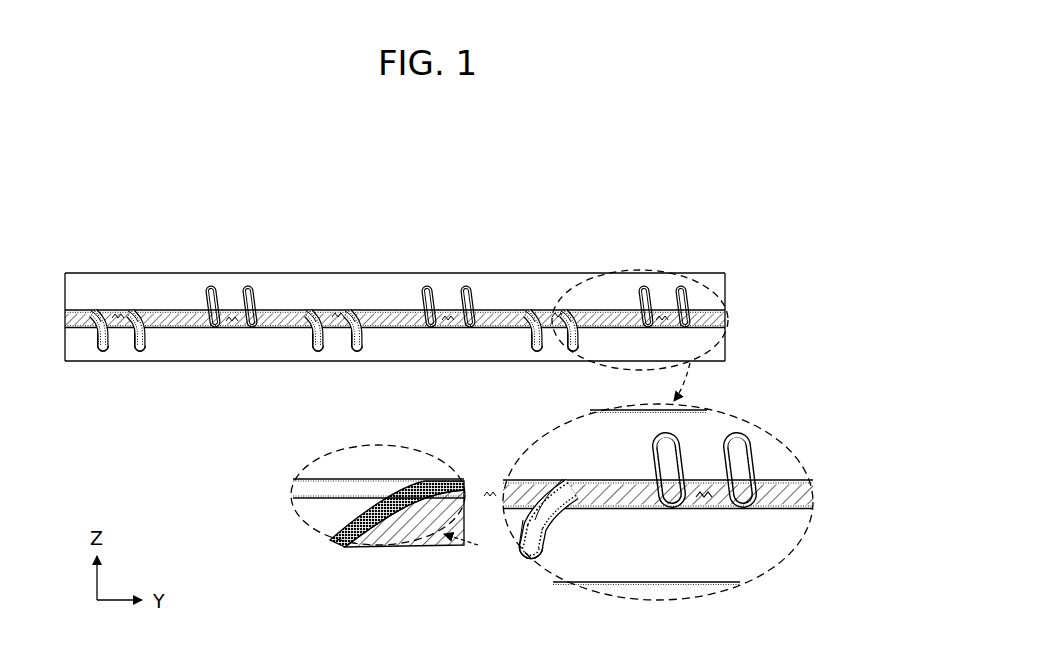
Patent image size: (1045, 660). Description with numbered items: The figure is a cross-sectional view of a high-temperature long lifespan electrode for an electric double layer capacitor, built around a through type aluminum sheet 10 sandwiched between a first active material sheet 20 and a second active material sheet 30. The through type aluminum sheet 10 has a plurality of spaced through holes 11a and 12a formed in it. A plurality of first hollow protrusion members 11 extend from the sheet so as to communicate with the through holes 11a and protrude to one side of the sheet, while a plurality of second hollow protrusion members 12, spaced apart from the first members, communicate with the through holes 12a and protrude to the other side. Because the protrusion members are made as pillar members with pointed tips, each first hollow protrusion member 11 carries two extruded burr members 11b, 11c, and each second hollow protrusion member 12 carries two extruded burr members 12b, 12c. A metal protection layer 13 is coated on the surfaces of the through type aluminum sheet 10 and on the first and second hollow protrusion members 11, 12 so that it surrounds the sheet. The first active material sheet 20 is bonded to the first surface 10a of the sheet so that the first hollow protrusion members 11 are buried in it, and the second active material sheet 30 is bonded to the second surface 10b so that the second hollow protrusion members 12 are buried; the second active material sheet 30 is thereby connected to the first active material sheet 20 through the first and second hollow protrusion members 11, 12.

The through type aluminum sheet 10 is at (439, 397).
The first surface 10a is at (150, 310).
The second surface 10b is at (170, 362).
The first hollow protrusion member 11 is at (503, 329).
The through hole 11a is at (237, 328).
The extruded burr member 11b is at (236, 294).
The extruded burr member 11c is at (258, 290).
The second hollow protrusion member 12 is at (310, 425).
The through hole 12a is at (90, 311).
The extruded burr member 12b is at (97, 340).
The extruded burr member 12c is at (130, 350).
The metal protection layer 13 is at (118, 312).
The first active material sheet 20 is at (383, 292).
The second active material sheet 30 is at (273, 343).